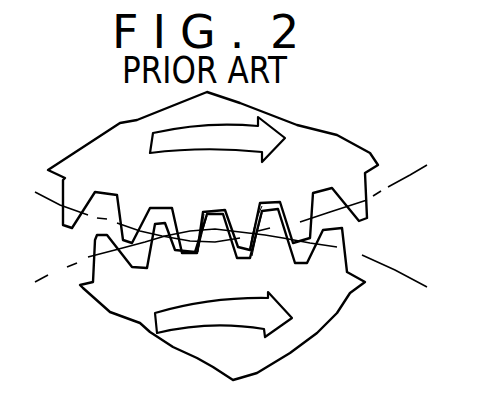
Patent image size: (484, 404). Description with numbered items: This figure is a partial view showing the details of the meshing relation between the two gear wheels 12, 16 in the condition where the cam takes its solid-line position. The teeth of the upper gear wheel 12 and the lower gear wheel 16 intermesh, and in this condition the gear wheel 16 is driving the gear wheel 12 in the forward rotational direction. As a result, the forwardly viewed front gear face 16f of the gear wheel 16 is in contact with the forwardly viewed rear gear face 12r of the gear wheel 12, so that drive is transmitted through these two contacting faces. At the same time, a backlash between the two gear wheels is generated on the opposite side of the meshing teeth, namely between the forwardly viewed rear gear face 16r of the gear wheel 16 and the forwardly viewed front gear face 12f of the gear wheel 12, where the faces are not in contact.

The gear wheel 12 is at (356, 155).
The forwardly viewed rear gear face 12r is at (206, 222).
The forwardly viewed front gear face 12f is at (264, 210).
The gear wheel 16 is at (328, 310).
The forwardly viewed rear gear face 16r is at (200, 245).
The forwardly viewed front gear face 16f is at (260, 248).